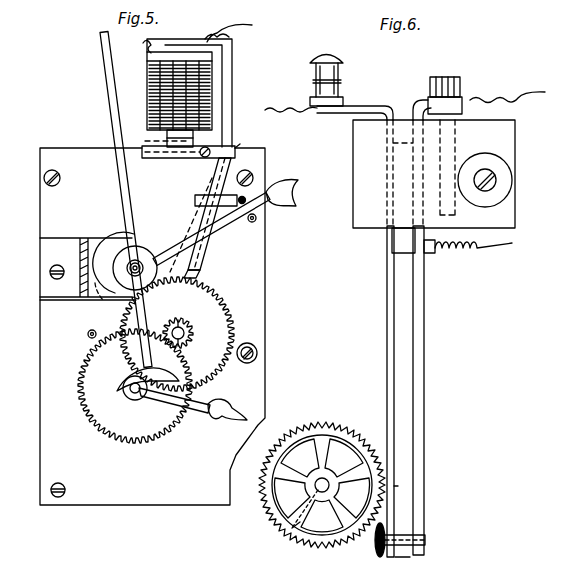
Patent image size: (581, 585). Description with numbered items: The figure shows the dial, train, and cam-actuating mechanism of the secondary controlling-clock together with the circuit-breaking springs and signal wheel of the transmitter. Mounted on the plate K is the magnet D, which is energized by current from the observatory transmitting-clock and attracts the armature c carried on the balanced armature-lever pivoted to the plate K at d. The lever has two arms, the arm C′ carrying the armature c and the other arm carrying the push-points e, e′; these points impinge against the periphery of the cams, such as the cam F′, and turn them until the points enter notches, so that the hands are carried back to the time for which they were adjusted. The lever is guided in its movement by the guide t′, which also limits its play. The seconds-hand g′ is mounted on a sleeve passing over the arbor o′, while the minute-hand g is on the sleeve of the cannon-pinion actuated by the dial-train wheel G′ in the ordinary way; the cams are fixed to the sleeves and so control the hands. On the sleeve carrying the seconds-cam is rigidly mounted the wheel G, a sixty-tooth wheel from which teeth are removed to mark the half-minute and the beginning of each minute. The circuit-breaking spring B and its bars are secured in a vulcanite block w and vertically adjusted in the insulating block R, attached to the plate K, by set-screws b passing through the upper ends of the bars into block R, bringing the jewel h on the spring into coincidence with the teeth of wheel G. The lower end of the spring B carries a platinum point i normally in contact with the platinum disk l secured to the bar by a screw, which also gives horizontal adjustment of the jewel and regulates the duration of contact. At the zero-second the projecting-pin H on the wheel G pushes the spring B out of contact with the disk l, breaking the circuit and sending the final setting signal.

In FIG. 5, the plate K is at (152, 338).
In FIG. 5, the magnet D is at (188, 85).
In FIG. 5, the armature c is at (186, 137).
In FIG. 5, the armature-lever arm C′ is at (188, 158).
In FIG. 5, the pivot d is at (243, 140).
In FIG. 5, the push-point e is at (200, 216).
In FIG. 5, the push-point e′ is at (201, 284).
In FIG. 5, the guide t′ is at (215, 193).
In FIG. 5, the minute-hand g is at (225, 223).
In FIG. 5, the cam F′ is at (125, 266).
In FIG. 5, the seconds-hand g′ is at (117, 216).
In FIG. 5, the dial-train wheel G′ is at (188, 334).
In FIG. 6, the vulcanite block w is at (434, 174).
In FIG. 6, the insulating block R is at (513, 177).
In FIG. 6, the binding post b′ is at (329, 88).
In FIG. 6, the set-screw b is at (479, 98).
In FIG. 6, the weight box W is at (403, 240).
In FIG. 6, the seconds-spring B is at (378, 391).
In FIG. 6, the projecting-pin H is at (322, 480).
In FIG. 6, the arbor o′ is at (286, 543).
In FIG. 6, the wheel G is at (326, 561).
In FIG. 6, the jewel h is at (402, 479).
In FIG. 6, the platinum point i is at (401, 528).
In FIG. 6, the platinum disk l is at (375, 548).